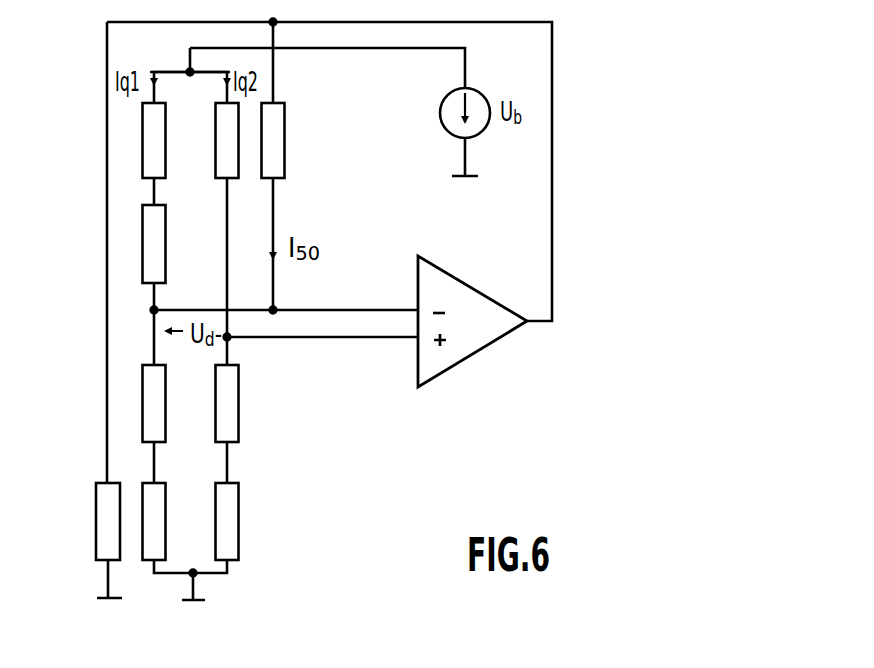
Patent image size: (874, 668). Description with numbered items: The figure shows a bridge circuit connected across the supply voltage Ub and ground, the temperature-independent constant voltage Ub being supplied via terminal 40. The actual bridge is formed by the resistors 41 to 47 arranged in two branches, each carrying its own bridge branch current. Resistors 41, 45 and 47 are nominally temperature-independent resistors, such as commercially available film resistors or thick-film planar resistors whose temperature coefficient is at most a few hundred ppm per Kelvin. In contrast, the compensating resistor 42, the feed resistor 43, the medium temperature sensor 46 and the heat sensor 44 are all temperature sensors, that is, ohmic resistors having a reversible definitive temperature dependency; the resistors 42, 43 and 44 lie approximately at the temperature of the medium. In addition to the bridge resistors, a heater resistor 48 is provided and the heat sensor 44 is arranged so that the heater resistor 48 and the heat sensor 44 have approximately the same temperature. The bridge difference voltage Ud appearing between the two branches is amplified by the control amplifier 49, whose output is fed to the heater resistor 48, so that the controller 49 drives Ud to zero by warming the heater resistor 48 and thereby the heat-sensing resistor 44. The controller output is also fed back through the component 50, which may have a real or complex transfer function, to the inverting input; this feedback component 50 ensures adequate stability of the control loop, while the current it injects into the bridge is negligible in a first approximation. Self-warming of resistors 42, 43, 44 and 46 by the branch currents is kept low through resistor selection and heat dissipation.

The terminal 40 is at (190, 72).
The resistor 41 is at (163, 163).
The compensating resistor 42 is at (160, 263).
The feed resistor 43 is at (160, 424).
The heat sensor 44 is at (155, 560).
The resistor 45 is at (237, 553).
The medium temperature sensor 46 is at (237, 390).
The resistor 47 is at (232, 170).
The heater resistor 48 is at (100, 546).
The control amplifier 49 is at (480, 345).
The feedback component 50 is at (283, 143).